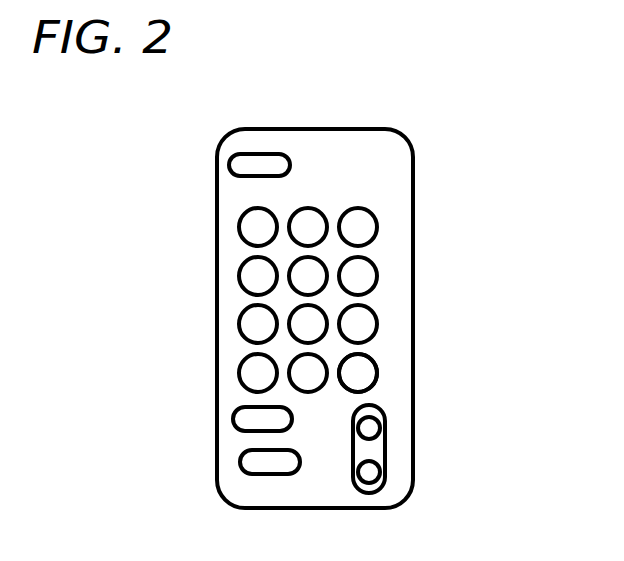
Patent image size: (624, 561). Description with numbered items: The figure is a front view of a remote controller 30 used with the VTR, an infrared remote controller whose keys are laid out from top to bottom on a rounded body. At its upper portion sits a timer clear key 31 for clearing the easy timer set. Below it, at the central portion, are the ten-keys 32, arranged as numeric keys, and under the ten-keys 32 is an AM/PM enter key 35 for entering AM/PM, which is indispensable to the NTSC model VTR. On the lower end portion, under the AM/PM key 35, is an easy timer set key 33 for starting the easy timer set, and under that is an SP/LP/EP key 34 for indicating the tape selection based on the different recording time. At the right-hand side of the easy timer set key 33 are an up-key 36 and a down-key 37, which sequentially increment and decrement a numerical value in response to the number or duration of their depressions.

The remote controller 30 is at (300, 129).
The timer clear key 31 is at (229, 165).
The ten-keys 32 is at (228, 272).
The easy timer set key 33 is at (237, 422).
The SP/LP/EP key 34 is at (240, 462).
The AM/PM enter key 35 is at (394, 365).
The up-key 36 is at (383, 428).
The down-key 37 is at (383, 480).